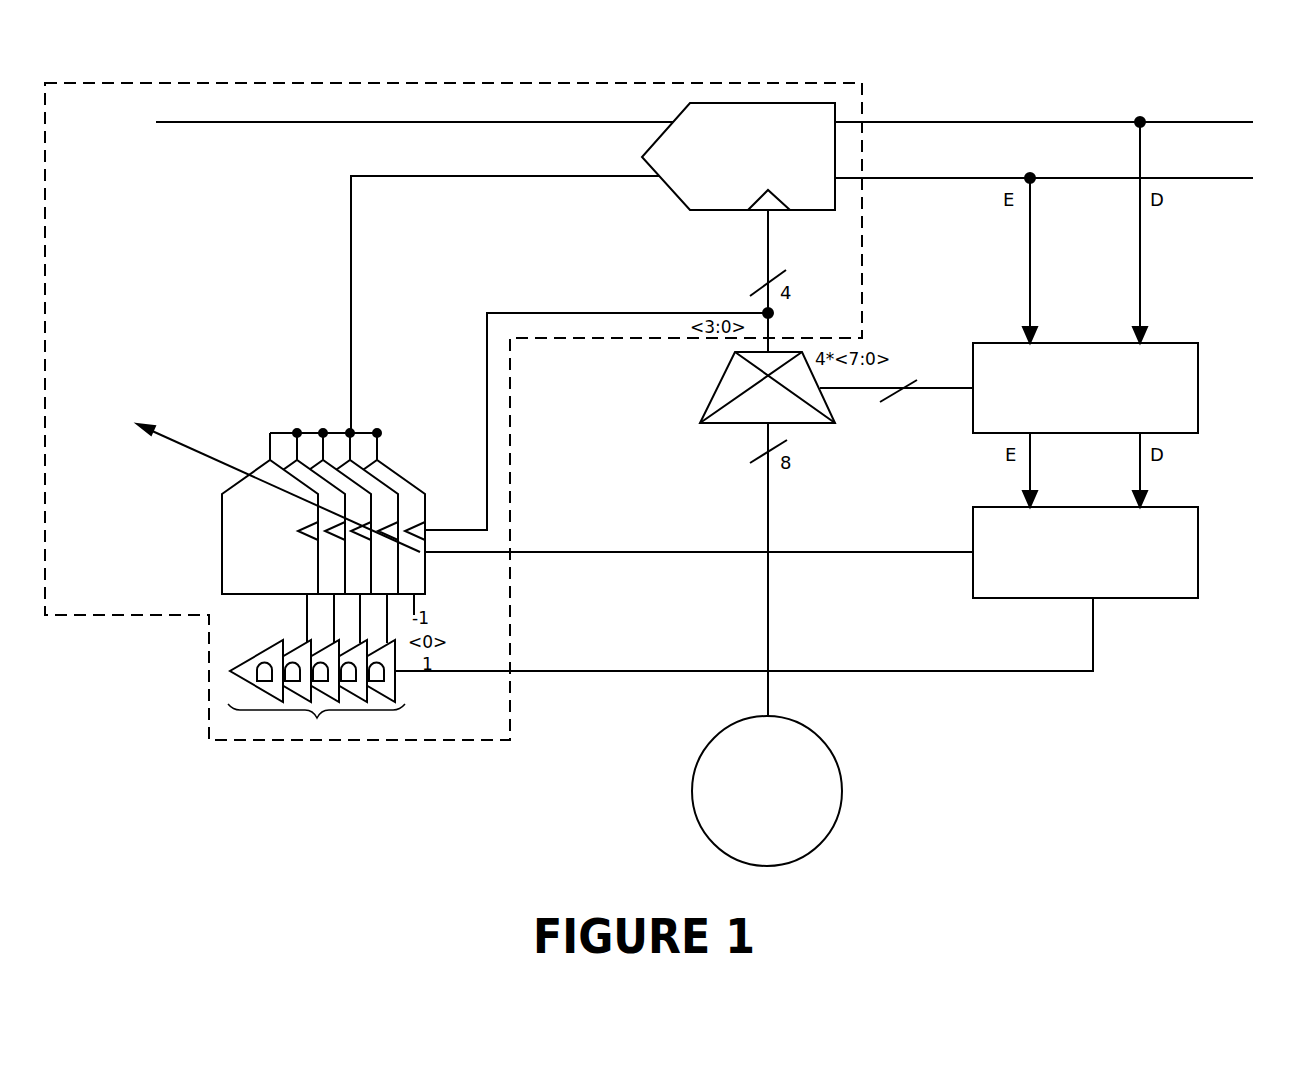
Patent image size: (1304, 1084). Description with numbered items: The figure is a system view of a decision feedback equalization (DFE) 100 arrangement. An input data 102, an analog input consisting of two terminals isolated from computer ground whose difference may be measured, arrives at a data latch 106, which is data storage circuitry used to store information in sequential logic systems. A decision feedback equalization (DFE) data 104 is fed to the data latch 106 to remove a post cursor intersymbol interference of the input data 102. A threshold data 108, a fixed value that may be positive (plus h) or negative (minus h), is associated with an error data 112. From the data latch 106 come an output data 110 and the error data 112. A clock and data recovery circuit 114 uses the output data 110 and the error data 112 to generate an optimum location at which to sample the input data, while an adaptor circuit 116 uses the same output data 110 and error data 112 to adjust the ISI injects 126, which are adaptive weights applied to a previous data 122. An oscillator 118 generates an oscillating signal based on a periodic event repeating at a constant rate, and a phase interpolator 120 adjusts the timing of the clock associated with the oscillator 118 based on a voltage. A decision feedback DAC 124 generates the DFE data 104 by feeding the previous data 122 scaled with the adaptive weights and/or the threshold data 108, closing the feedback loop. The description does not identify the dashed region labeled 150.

The decision feedback equalization (DFE) 100 is at (1028, 819).
The input data 102 is at (190, 122).
The decision feedback equalization (DFE) data 104 is at (352, 238).
The data latch 106 is at (752, 108).
The threshold data 108 is at (228, 392).
The output data 110 is at (1196, 122).
The error data 112 is at (1203, 181).
The clock and data recovery circuit 114 is at (1200, 390).
The adaptor circuit 116 is at (1200, 552).
The oscillator 118 is at (843, 785).
The phase interpolator 120 is at (830, 412).
The previous data 122 is at (317, 716).
The decision feedback DAC 124 is at (268, 545).
The ISI injects 126 is at (118, 397).
The dashed block 150 is at (445, 742).